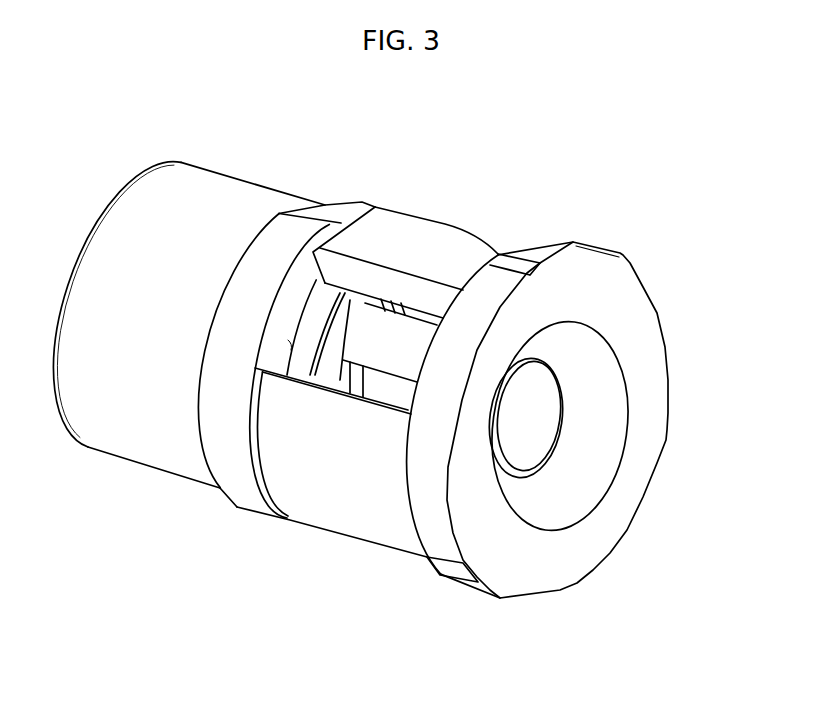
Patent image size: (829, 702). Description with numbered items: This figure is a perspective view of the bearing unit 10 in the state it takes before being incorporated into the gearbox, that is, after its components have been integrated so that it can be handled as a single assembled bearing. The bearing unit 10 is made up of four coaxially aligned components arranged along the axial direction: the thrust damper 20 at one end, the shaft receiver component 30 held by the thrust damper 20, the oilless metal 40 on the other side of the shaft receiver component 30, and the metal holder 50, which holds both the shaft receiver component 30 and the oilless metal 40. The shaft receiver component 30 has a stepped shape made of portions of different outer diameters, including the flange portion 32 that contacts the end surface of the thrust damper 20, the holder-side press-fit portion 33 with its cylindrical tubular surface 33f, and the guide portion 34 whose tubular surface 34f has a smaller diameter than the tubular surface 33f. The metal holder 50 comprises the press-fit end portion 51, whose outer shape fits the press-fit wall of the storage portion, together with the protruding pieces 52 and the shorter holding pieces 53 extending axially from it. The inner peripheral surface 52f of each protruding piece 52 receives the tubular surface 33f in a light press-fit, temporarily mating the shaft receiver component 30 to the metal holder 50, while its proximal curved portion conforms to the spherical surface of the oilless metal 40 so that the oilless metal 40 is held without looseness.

The bearing unit 10 is at (574, 175).
The thrust damper 20 is at (276, 182).
The shaft receiver component 30 is at (380, 200).
The flange portion 32 is at (224, 463).
The holder-side press-fit portion 33 is at (301, 338).
The tubular surface 33f is at (290, 344).
The guide portion 34 is at (348, 300).
The tubular surface 34f is at (338, 308).
The oilless metal 40 is at (380, 386).
The metal holder 50 is at (610, 242).
The press-fit end portion 51 is at (645, 322).
The protruding pieces 52 is at (412, 228).
The inner peripheral surface 52f is at (360, 300).
The holding pieces 53 is at (368, 350).